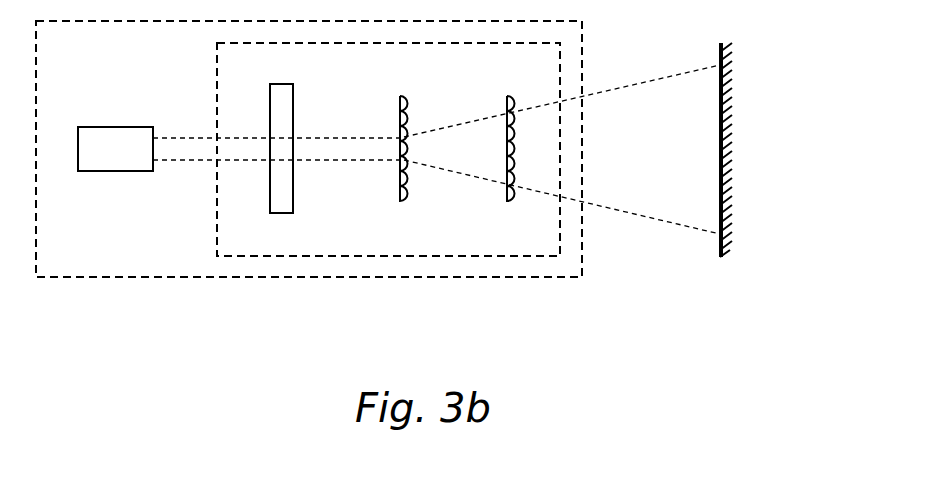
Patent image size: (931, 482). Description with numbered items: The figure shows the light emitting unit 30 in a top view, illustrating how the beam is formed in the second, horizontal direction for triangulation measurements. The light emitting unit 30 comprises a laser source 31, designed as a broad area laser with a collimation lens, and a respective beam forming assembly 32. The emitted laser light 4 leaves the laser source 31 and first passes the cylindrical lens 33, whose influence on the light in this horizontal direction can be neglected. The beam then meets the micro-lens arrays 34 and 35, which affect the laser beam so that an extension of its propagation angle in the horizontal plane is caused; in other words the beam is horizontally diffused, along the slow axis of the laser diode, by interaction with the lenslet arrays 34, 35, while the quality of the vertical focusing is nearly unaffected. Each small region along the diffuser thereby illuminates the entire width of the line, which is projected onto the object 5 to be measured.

The light emitting unit 30 is at (99, 68).
The beam forming assembly 32 is at (261, 81).
The laser source 31 is at (104, 180).
The emitted laser light 4 is at (427, 149).
The cylindrical lens 33 is at (249, 202).
The micro-lens array 34 is at (369, 207).
The micro-lens array 35 is at (476, 207).
The object 5 is at (749, 150).